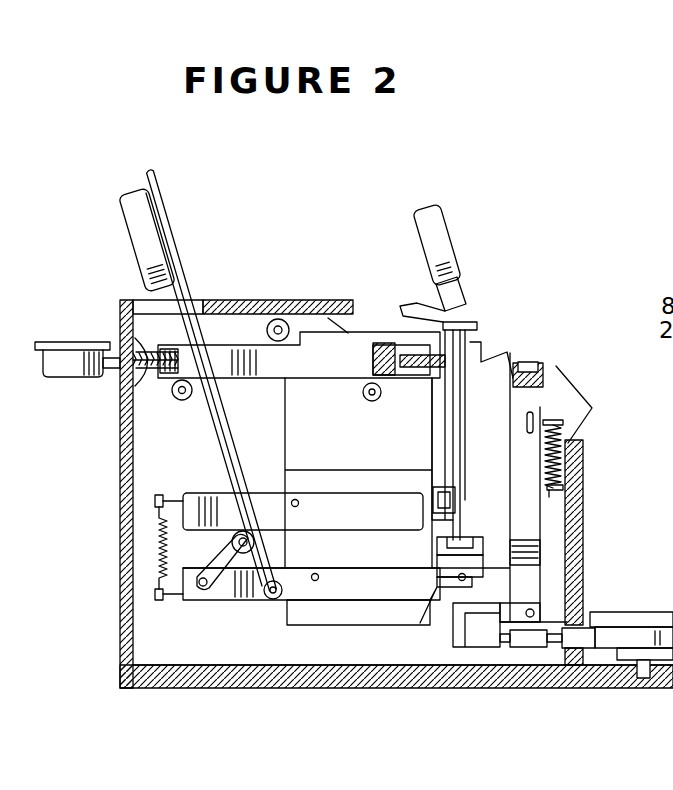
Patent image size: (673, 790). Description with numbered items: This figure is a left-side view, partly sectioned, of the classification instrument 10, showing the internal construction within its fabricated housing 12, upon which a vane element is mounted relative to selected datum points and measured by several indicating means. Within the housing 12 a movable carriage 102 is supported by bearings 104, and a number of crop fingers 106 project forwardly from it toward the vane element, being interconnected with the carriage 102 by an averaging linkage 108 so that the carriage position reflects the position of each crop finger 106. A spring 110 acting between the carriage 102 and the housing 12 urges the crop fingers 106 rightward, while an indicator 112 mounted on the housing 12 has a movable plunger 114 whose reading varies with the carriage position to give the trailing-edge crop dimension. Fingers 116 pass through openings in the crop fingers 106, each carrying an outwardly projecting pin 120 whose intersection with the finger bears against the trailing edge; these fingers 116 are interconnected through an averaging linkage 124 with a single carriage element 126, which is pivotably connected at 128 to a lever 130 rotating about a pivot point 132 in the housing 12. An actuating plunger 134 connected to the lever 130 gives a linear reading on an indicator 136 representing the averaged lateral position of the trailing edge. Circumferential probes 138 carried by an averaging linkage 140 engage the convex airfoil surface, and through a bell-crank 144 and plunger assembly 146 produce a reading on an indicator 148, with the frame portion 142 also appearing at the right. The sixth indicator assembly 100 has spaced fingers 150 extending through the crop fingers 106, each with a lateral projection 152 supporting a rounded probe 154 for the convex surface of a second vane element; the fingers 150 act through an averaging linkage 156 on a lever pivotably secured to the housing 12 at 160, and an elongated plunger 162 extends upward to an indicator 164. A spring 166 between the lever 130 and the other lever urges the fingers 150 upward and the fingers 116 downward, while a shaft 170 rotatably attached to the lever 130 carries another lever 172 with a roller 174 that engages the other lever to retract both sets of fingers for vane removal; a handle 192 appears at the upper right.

The classification instrument 10 is at (295, 210).
The fabricated housing 12 is at (217, 290).
The sixth indicator assembly 100 is at (432, 432).
The movable carriage 102 is at (315, 352).
The bearings 104 is at (278, 319).
The crop fingers 106 is at (412, 355).
The averaging linkage 108 is at (372, 358).
The spring 110 is at (145, 350).
The indicator 112 is at (62, 368).
The movable plunger 114 is at (133, 392).
The fingers 116 is at (460, 450).
The outwardly projecting pin 120 is at (480, 347).
The averaging linkage 124 is at (436, 548).
The carriage element 126 is at (483, 570).
The pivot connection 128 is at (443, 597).
The lever 130 is at (353, 590).
The pivot point 132 is at (318, 575).
The actuating plunger 134 is at (222, 443).
The indicator 136 is at (135, 225).
The circumferential probes 138 is at (530, 360).
The averaging linkage 140 is at (570, 371).
The frame 142 is at (527, 507).
The bell-crank 144 is at (497, 623).
The plunger assembly 146 is at (532, 647).
The indicator 148 is at (633, 618).
The fingers 150 is at (453, 412).
The lateral projection 152 is at (472, 325).
The rounded probe 154 is at (470, 307).
The averaging linkage 156 is at (460, 498).
The pivot 160 is at (297, 500).
The elongated plunger 162 is at (222, 417).
The indicator 164 is at (162, 194).
The spring 166 is at (158, 548).
The shaft 170 is at (203, 584).
The lever 172 is at (217, 570).
The roller 174 is at (252, 534).
The handle 192 is at (447, 227).